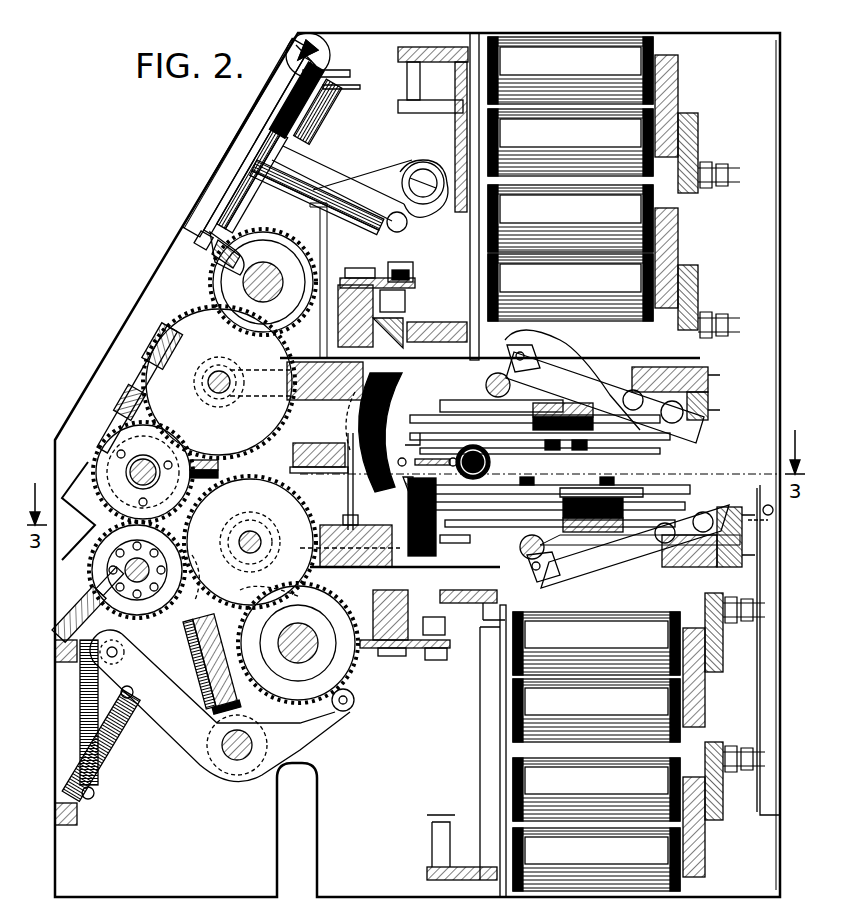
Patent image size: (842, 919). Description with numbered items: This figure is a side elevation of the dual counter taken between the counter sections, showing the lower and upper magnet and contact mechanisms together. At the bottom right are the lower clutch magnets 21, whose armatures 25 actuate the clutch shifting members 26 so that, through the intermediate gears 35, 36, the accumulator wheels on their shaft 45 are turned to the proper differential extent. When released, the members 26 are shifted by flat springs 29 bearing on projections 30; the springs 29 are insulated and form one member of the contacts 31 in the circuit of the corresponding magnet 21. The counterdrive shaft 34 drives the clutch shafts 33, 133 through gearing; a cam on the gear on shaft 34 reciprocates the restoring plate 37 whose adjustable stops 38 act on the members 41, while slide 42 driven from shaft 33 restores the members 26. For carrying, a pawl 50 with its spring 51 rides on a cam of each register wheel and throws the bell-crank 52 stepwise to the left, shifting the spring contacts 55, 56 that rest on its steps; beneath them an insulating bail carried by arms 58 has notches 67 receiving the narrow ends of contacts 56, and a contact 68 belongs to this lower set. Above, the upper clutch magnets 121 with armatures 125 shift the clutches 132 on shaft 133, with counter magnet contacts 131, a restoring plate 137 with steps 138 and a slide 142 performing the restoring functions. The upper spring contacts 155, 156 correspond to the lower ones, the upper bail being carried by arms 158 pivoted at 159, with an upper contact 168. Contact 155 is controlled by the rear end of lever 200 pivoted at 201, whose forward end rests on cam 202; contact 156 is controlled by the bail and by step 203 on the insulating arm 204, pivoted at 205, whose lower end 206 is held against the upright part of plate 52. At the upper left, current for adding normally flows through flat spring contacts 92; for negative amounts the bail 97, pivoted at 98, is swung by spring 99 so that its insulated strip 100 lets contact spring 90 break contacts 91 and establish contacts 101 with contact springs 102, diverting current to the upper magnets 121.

The clutch magnet 21 is at (639, 742).
The armature 25 is at (503, 687).
The clutch shifting member 26 is at (392, 580).
The flat spring 29 is at (610, 565).
The projection 30 is at (527, 580).
The contact 31 is at (570, 573).
The clutch shaft 33 is at (253, 535).
The counterdrive shaft 34 is at (312, 660).
The intermediate gear 35 is at (250, 542).
The intermediate gear 36 is at (220, 704).
The restoring plate 37 is at (413, 657).
The adjustable stop 38 is at (448, 640).
The member 41 is at (480, 662).
The slide 42 is at (335, 527).
The shaft 45 is at (135, 572).
The pawl 50 is at (243, 553).
The spring 51 is at (190, 657).
The bell-crank 52 is at (300, 600).
The spring contact 55 is at (533, 503).
The spring contact 56 is at (610, 480).
The arm 58 is at (518, 543).
The notch 67 is at (458, 507).
The contact 68 is at (461, 540).
The contact spring 90 is at (205, 238).
The contact 91 is at (203, 228).
The flat spring contact 92 is at (222, 186).
The bail 97 is at (243, 148).
The pivot 98 is at (300, 44).
The spring 99 is at (349, 155).
The insulated contact strip 100 is at (225, 256).
The contact 101 is at (248, 204).
The contact spring 102 is at (250, 213).
The clutch magnet 121 is at (614, 187).
The armature 125 is at (470, 118).
The counter magnet contact 131 is at (524, 352).
The clutch 132 is at (205, 367).
The clutch shaft 133 is at (210, 387).
The restoring plate 137 is at (380, 285).
The step 138 is at (413, 303).
The slide 142 is at (322, 393).
The spring contact 155 is at (520, 447).
The spring contact 156 is at (477, 427).
The arm 158 is at (555, 365).
The pivot 159 is at (563, 380).
The upper contact 168 is at (492, 372).
The lever 200 is at (280, 433).
The pivot 201 is at (277, 463).
The cam 202 is at (113, 470).
The step 203 is at (500, 393).
The arm 204 is at (328, 436).
The pivot 205 is at (405, 325).
The lower end 206 is at (402, 487).